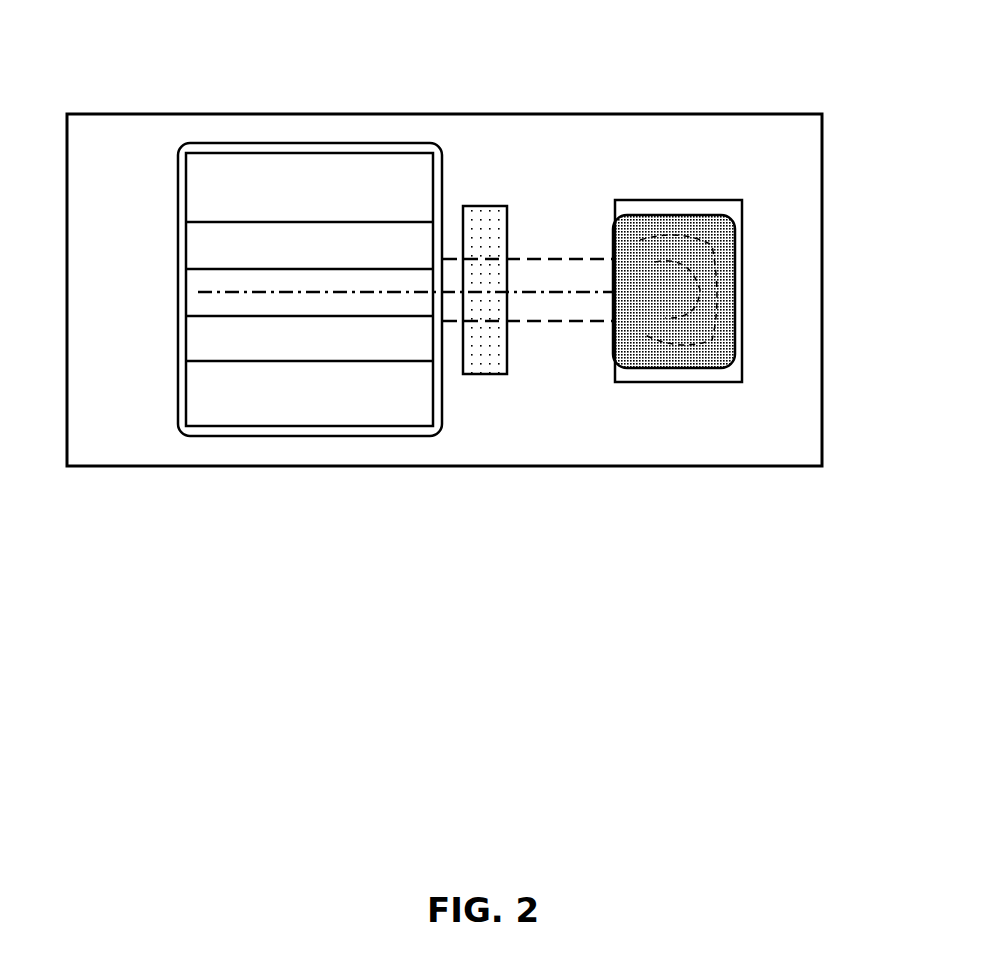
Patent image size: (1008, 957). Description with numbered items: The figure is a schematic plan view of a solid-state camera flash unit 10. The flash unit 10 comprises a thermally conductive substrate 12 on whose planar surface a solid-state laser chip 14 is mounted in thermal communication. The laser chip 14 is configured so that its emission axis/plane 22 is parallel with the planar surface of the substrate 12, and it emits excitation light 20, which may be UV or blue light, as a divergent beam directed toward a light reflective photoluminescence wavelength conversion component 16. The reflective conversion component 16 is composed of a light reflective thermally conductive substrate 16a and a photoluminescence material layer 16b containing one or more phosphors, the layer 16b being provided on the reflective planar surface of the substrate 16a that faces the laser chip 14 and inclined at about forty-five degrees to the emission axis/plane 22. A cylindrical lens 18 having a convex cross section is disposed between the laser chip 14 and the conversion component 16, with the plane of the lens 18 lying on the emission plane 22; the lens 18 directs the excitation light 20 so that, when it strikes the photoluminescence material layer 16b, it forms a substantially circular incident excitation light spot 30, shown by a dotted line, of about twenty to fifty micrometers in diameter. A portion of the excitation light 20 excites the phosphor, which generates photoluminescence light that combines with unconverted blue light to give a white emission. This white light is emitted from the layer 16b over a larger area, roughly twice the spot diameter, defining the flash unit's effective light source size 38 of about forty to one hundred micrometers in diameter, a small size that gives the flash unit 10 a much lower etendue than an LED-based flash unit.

The flash unit 10 is at (392, 611).
The thermally conductive substrate 12 is at (130, 443).
The solid-state laser chip 14 is at (163, 153).
The light reflective photoluminescence wavelength conversion component 16 is at (742, 293).
The light reflective thermally conductive substrate 16a is at (722, 375).
The photoluminescence material layer 16b is at (703, 362).
The lens 18 is at (484, 368).
The excitation light 20 is at (563, 323).
The laser chip emission axis/plane 22 is at (577, 292).
The incident excitation light spot 30 is at (688, 262).
The effective light source size 38 is at (707, 243).